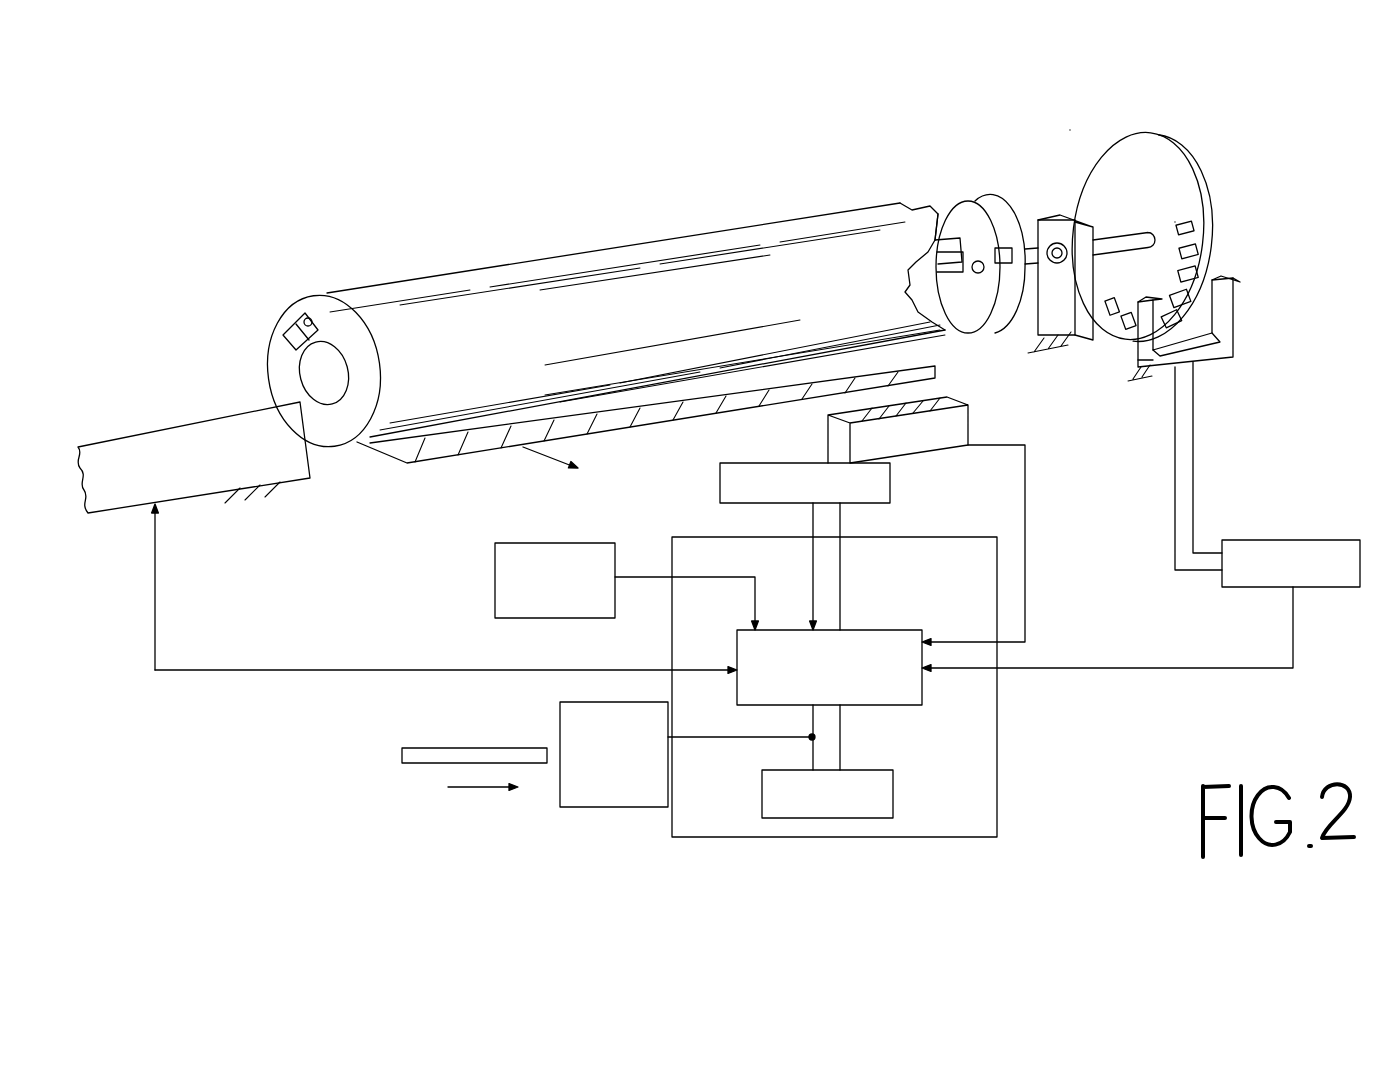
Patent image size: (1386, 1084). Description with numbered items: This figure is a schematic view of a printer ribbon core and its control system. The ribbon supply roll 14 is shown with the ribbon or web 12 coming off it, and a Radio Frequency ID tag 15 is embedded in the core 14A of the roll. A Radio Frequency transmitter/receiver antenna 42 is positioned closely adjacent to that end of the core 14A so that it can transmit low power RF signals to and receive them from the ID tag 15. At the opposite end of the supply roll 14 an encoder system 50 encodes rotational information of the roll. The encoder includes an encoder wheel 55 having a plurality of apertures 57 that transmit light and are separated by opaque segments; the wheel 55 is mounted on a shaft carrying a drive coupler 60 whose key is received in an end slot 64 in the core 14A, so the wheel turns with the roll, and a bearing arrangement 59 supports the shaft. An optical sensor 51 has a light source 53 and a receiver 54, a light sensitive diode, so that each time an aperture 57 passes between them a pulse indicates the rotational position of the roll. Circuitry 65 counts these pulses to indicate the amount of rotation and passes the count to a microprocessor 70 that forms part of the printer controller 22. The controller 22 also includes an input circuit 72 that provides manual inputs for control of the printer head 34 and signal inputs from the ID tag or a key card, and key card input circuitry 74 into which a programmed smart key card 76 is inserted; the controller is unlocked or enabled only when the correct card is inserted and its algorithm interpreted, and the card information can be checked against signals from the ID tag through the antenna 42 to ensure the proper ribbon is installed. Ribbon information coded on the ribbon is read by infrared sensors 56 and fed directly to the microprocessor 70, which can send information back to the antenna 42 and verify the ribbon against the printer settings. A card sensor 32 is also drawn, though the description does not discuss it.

The ribbon or web 12 is at (407, 464).
The ribbon supply roll 14 is at (610, 319).
The core 14A is at (340, 333).
The Radio Frequency ID tag 15 is at (287, 320).
The printer controller 22 is at (997, 690).
The card sensor 32 is at (540, 543).
The printer head 34 is at (720, 478).
The Radio Frequency transmitter/receiver antenna 42 is at (283, 410).
The encoder system 50 is at (1256, 320).
The optical sensor 51 is at (1222, 360).
The light source 53 is at (1246, 290).
The receiver 54 is at (1138, 360).
The encoder wheel 55 is at (1143, 190).
The infrared sensors 56 is at (968, 415).
The apertures 57 is at (1193, 252).
The bearing arrangement 59 is at (1057, 218).
The drive coupler 60 is at (978, 220).
The end slot 64 is at (940, 212).
The circuitry 65 is at (1253, 545).
The microprocessor 70 is at (892, 630).
The input circuit 72 is at (893, 780).
The key card input circuitry 74 is at (560, 790).
The key card 76 is at (415, 752).